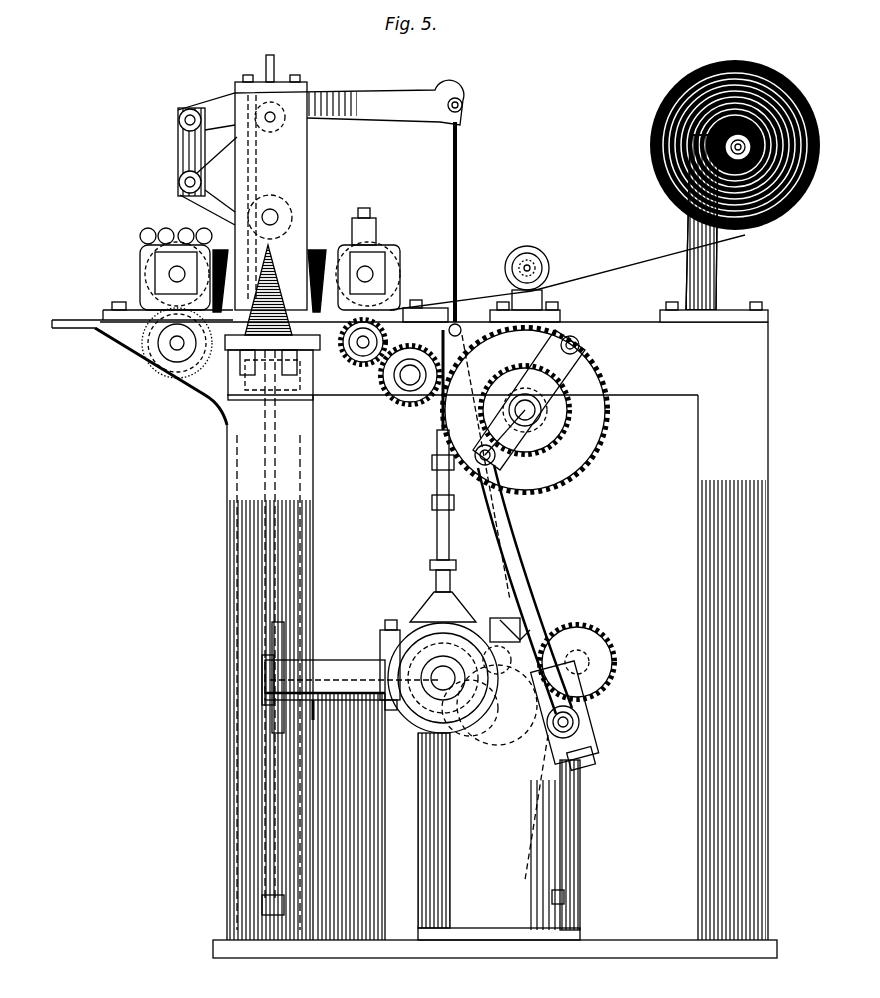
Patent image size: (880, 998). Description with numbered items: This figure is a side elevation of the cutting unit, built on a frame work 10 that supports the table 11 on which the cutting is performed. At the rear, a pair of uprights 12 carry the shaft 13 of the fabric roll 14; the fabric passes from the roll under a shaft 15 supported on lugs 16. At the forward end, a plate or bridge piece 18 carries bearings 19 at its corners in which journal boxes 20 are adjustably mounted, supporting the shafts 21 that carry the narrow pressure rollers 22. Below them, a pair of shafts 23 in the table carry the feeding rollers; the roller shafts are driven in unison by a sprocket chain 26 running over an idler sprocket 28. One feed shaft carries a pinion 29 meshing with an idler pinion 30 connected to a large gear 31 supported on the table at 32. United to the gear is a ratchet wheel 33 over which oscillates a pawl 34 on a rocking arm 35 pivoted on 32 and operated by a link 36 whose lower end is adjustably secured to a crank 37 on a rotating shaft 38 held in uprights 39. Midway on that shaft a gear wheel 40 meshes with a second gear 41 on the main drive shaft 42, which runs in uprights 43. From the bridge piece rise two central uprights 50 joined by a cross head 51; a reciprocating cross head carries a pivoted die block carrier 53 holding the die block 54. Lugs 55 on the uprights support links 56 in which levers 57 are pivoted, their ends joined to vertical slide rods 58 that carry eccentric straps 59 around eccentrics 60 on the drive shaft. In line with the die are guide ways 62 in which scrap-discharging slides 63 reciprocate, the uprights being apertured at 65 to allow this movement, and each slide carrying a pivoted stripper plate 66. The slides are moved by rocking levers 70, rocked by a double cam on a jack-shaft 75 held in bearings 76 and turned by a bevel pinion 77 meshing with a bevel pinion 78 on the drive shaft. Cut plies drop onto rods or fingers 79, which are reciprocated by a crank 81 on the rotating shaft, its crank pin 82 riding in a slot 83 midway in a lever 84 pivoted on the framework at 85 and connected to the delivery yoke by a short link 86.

The frame work 10 is at (313, 533).
The table 11 is at (655, 395).
The uprights 12 is at (690, 240).
The shaft 13 is at (728, 147).
The fabric roll 14 is at (775, 222).
The shaft 15 is at (530, 262).
The lugs 16 is at (545, 306).
The plate or bridge piece 18 is at (418, 318).
The bearings 19 is at (140, 280).
The journal boxes 20 is at (152, 256).
The shafts 21 is at (178, 268).
The pressure rollers 22 is at (152, 232).
The shafts 23 is at (175, 345).
The sprocket chain 26 is at (290, 222).
The idler sprocket 28 is at (292, 192).
The pinion 29 is at (360, 365).
The idler pinion 30 is at (410, 405).
The large gear 31 is at (590, 472).
The pivot 32 is at (575, 402).
The ratchet wheel 33 is at (540, 455).
The pawl 34 is at (560, 356).
The rocking arm 35 is at (592, 375).
The link 36 is at (503, 540).
The crank 37 is at (580, 692).
The rotating shaft 38 is at (578, 660).
The uprights 39 is at (582, 822).
The gear wheel 40 is at (613, 668).
The second gear 41 is at (446, 733).
The main drive shaft 42 is at (438, 682).
The uprights 43 is at (440, 838).
The central uprights 50 is at (300, 140).
The cross head 51 is at (305, 84).
The die block carrier 53 is at (250, 160).
The die block 54 is at (240, 342).
The lugs 55 is at (205, 196).
The links 56 is at (178, 138).
The levers 57 is at (442, 118).
The slide rods 58 is at (458, 165).
The eccentric straps 59 is at (420, 610).
The eccentrics 60 is at (395, 640).
The guide ways 62 is at (243, 360).
The slides 63 is at (277, 362).
The apertures 65 is at (282, 263).
The stripper plate 66 is at (222, 385).
The rocking levers 70 is at (265, 566).
The jack-shaft 75 is at (322, 668).
The bearings 76 is at (385, 662).
The bevel pinion 77 is at (382, 702).
The bevel pinion 78 is at (462, 598).
The rods or fingers 79 is at (70, 326).
The crank 81 is at (508, 735).
The crank pin 82 is at (490, 725).
The slot 83 is at (515, 612).
The lever 84 is at (530, 835).
The pivot 85 is at (566, 898).
The short link 86 is at (462, 328).